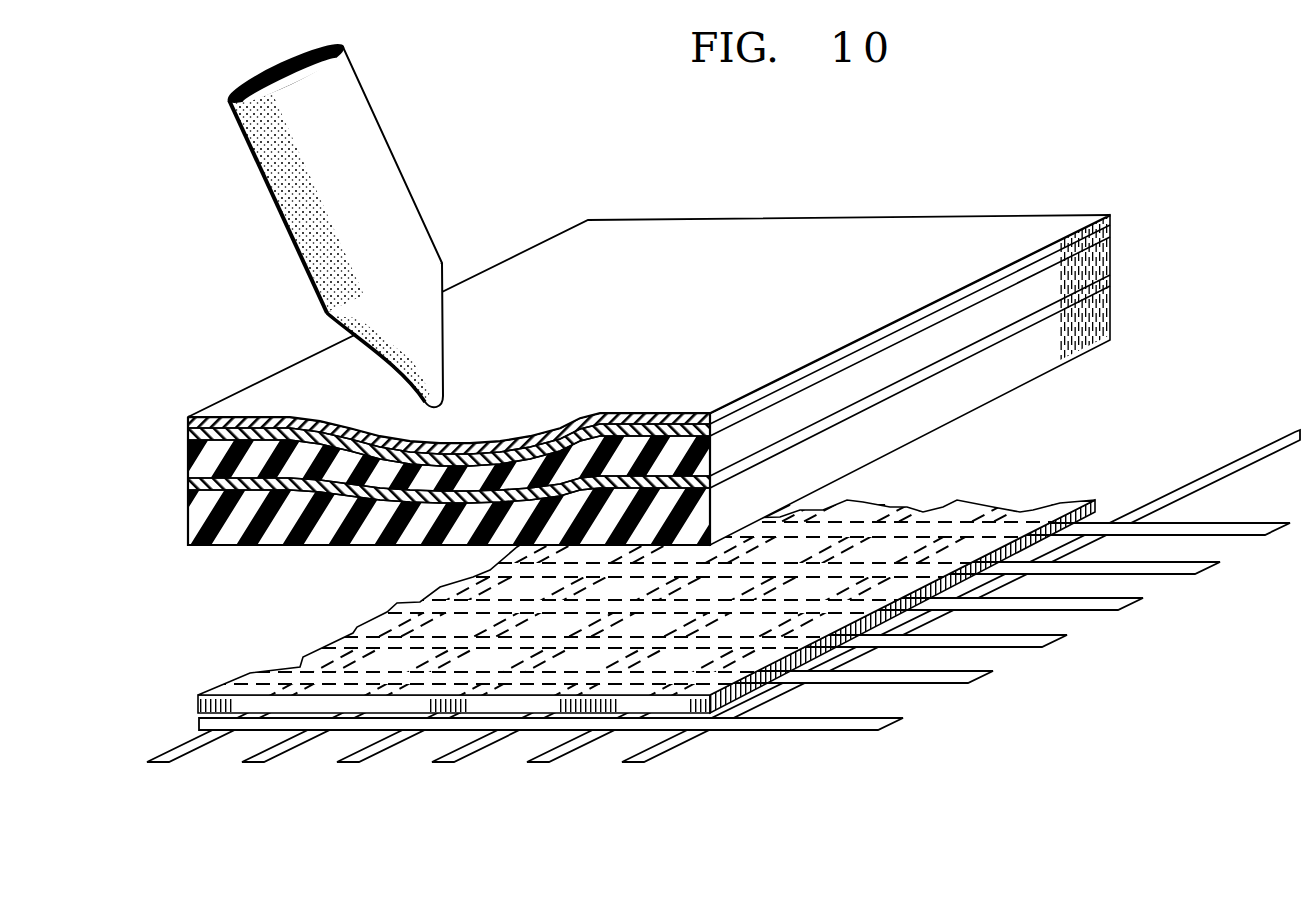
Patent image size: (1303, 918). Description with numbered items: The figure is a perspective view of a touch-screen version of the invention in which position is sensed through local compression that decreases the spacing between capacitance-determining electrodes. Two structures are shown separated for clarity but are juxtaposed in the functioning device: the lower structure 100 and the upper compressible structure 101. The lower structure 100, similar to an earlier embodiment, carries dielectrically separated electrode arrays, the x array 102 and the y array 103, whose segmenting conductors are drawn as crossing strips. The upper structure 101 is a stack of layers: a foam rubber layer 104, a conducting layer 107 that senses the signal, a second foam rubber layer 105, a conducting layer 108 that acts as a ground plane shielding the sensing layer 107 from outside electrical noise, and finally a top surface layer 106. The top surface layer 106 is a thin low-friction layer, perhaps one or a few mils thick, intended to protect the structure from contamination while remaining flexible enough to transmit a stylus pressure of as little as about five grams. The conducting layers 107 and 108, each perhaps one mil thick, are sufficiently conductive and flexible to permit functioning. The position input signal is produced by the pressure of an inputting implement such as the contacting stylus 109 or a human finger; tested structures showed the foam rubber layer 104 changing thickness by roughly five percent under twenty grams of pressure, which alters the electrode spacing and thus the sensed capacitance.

The structure 100 is at (1184, 678).
The structure 101 is at (957, 486).
The x array 102 is at (900, 716).
The y array 103 is at (158, 759).
The foam rubber layer 104 is at (188, 522).
The foam rubber layer 105 is at (188, 457).
The top surface layer 106 is at (711, 228).
The conducting layer 107 is at (1113, 285).
The conducting layer 108 is at (1112, 237).
The stylus 109 is at (378, 158).